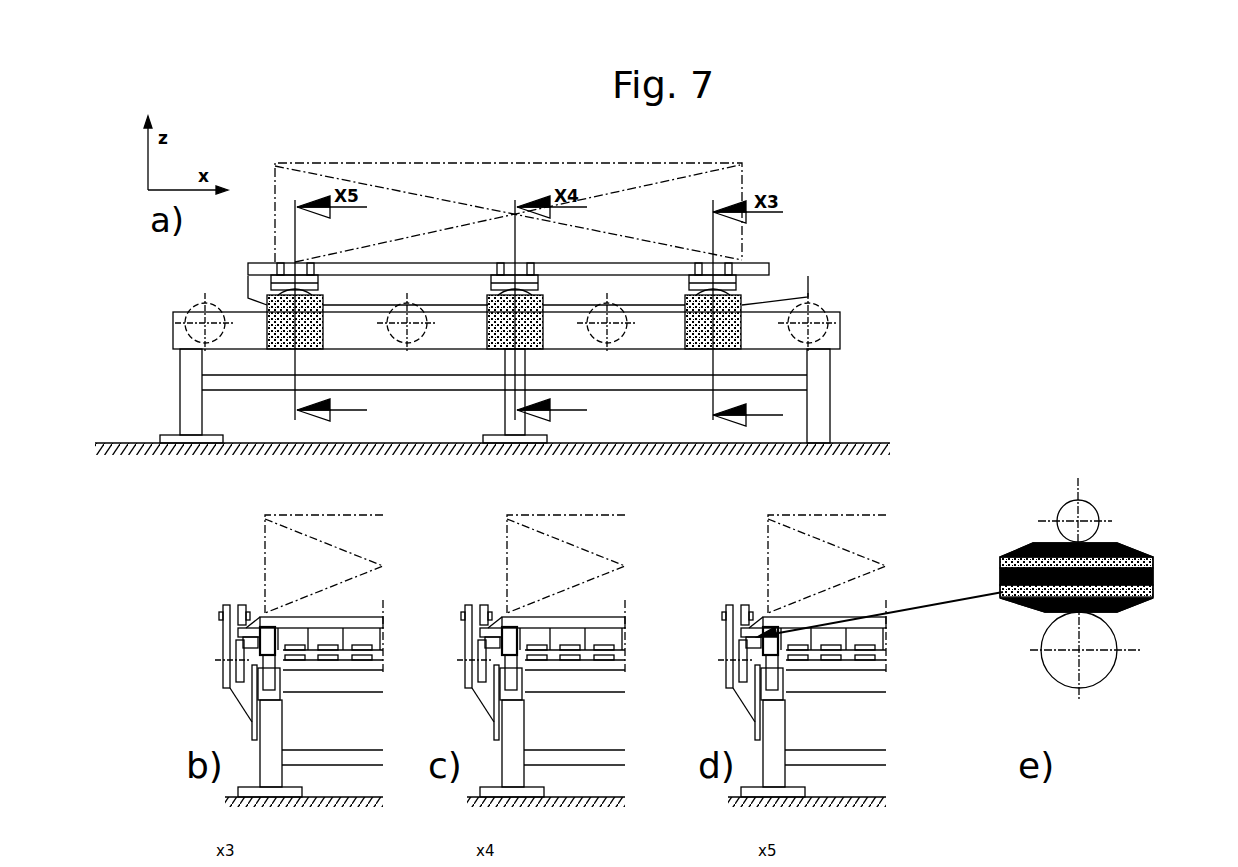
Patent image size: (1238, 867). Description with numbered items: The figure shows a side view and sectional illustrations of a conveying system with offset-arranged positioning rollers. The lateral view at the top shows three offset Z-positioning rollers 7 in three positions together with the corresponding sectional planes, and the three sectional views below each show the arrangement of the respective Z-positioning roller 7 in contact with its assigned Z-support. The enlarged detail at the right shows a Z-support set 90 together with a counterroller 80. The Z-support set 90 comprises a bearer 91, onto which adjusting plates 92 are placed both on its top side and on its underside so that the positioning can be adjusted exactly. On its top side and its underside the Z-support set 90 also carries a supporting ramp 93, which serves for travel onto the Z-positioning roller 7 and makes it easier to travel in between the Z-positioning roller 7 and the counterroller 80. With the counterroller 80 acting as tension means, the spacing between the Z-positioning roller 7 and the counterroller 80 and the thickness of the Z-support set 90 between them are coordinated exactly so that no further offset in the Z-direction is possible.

The Z-positioning roller 7 is at (1096, 688).
The counterroller 80 is at (1060, 506).
The Z-support set 90 is at (1102, 502).
The bearer 91 is at (1156, 577).
The adjusting plates 92 is at (1156, 563).
The supporting ramp 93 is at (1132, 548).